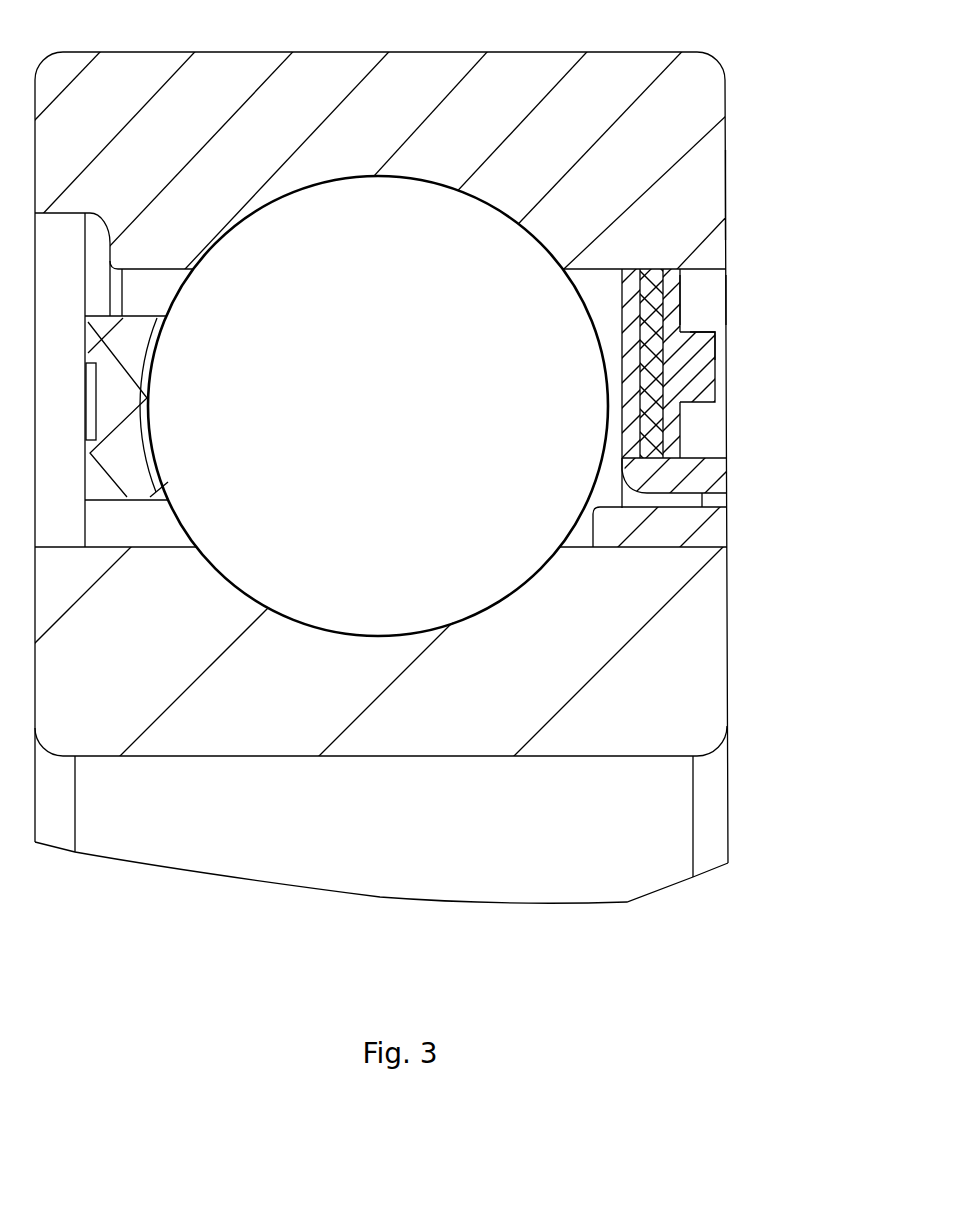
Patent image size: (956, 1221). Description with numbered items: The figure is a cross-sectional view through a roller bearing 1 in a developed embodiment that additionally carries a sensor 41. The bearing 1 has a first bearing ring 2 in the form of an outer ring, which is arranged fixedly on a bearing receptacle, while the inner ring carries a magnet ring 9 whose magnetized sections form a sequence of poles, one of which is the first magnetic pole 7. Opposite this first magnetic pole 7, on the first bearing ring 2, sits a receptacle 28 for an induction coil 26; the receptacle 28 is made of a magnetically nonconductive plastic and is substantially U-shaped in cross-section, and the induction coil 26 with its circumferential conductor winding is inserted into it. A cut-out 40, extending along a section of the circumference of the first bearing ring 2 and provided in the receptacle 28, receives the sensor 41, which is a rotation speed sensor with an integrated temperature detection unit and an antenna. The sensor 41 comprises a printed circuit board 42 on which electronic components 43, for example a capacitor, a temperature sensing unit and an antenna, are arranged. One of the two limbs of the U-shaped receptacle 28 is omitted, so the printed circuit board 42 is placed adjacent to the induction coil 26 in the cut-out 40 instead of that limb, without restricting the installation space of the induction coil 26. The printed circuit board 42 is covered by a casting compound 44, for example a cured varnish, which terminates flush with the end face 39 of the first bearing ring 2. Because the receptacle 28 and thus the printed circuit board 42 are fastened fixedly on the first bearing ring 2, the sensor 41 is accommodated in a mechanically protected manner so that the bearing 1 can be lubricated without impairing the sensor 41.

The bearing 1 is at (431, 471).
The first bearing ring 2 is at (687, 130).
The first magnetic pole 7 is at (660, 528).
The magnet ring 9 is at (732, 523).
The induction coil 26 is at (648, 311).
The receptacle 28 is at (697, 472).
The end face 39 is at (725, 192).
The cut-out 40 is at (745, 282).
The sensor 41 is at (693, 362).
The printed circuit board 42 is at (685, 293).
The electronic components 43 is at (707, 348).
The casting compound 44 is at (707, 323).